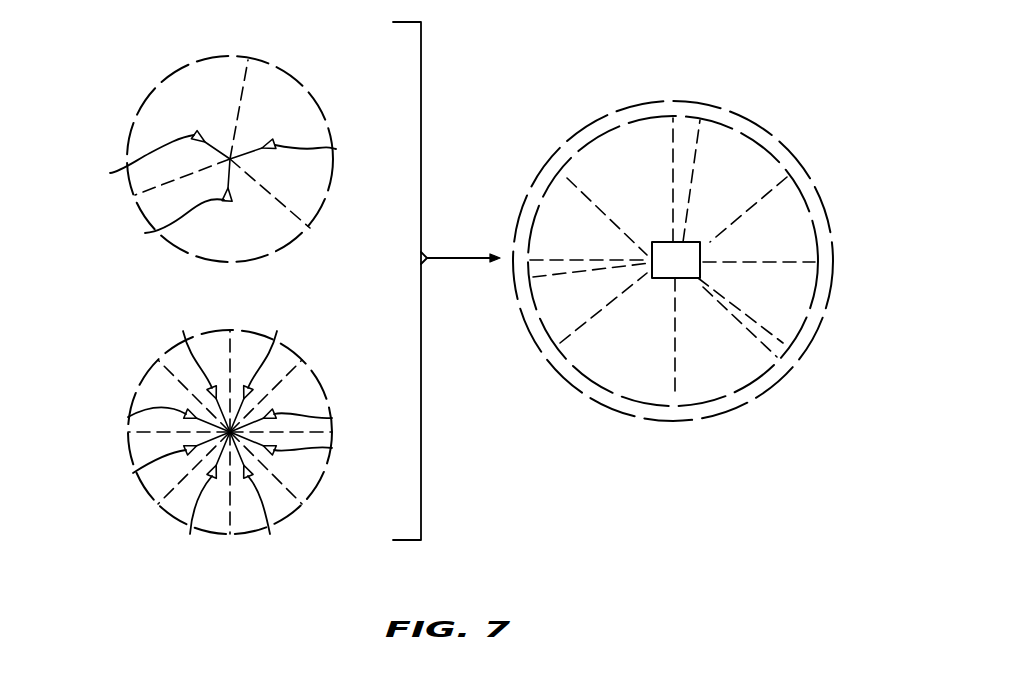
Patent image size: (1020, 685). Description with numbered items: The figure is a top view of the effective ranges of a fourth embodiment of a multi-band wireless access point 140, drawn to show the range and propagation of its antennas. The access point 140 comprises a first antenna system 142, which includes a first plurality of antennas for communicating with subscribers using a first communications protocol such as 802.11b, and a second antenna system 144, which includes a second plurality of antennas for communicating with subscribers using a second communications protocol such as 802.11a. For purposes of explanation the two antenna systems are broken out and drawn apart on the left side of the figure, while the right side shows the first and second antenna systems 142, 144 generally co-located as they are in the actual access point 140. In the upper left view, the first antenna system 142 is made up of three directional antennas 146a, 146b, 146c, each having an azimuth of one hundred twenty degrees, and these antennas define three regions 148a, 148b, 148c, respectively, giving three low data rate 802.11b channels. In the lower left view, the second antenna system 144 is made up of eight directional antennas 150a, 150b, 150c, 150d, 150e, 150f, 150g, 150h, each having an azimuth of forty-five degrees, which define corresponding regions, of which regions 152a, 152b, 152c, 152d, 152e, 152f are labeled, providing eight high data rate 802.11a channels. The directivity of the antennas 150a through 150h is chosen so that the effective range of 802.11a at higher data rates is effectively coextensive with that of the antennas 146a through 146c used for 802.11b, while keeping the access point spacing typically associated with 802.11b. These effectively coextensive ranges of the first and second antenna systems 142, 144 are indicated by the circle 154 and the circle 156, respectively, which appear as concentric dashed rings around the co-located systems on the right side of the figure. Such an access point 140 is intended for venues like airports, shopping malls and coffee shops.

The multi-band wireless access point 140 is at (852, 145).
The first antenna system 142 is at (162, 56).
The second antenna system 144 is at (65, 329).
The directional antenna 146a is at (336, 149).
The directional antenna 146b is at (110, 173).
The directional antenna 146c is at (145, 233).
The region 148a is at (295, 129).
The region 148b is at (219, 110).
The region 148c is at (270, 244).
The directional antenna 150a is at (332, 418).
The directional antenna 150b is at (277, 331).
The directional antenna 150c is at (183, 331).
The directional antenna 150d is at (128, 417).
The directional antenna 150e is at (133, 473).
The directional antenna 150f is at (190, 534).
The directional antenna 150g is at (270, 534).
The directional antenna 150h is at (332, 448).
The region 152a is at (310, 403).
The region 152b is at (290, 358).
The region 152c is at (163, 366).
The region 152d is at (138, 392).
The region 152e is at (143, 448).
The region 152f is at (167, 500).
The circle 154 is at (283, 70).
The circle 156 is at (220, 534).